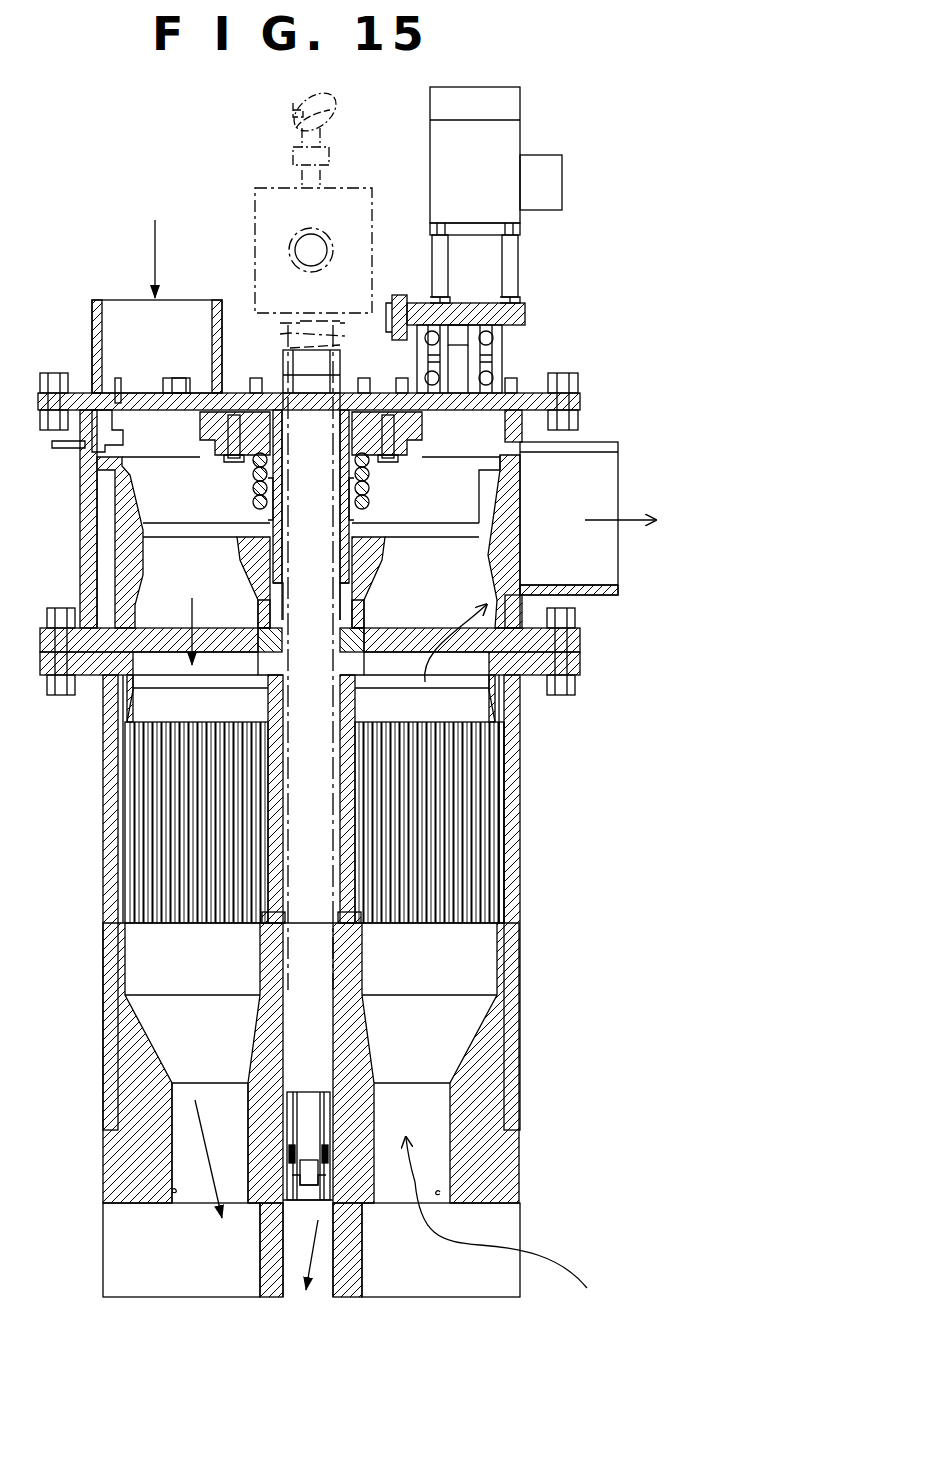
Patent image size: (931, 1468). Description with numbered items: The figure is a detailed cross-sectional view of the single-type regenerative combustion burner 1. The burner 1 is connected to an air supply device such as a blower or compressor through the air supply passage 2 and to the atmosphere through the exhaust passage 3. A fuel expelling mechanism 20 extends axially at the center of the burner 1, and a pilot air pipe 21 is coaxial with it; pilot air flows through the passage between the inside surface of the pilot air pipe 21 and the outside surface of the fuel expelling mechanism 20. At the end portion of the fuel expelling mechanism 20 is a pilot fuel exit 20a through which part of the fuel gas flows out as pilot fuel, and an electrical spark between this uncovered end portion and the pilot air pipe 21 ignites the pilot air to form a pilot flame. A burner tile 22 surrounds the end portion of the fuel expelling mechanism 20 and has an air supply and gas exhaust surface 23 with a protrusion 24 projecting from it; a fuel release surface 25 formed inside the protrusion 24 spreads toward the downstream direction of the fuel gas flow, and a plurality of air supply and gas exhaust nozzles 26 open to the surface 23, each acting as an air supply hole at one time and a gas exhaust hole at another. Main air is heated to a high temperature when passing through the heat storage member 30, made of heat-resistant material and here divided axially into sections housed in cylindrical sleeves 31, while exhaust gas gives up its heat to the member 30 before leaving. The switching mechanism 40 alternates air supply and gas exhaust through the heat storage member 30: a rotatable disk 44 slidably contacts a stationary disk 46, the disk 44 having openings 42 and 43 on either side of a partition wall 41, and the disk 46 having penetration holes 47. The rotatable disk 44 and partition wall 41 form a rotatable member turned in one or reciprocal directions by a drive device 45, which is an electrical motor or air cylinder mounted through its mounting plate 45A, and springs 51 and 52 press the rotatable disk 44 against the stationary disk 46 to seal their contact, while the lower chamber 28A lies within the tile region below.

The regenerative combustion burner 1 is at (101, 880).
The air supply passage 2 is at (102, 320).
The exhaust passage 3 is at (600, 455).
The fuel expelling mechanism 20 is at (318, 1110).
The pilot fuel exit 20a is at (323, 1205).
The pilot air pipe 21 is at (322, 985).
The burner tile 22 is at (116, 1142).
The air supply and gas exhaust surface 23 is at (515, 1215).
The protrusion 24 is at (258, 1232).
The fuel release surface 25 is at (282, 1295).
The air supply and gas exhaust nozzles 26 is at (175, 1190).
The lower chamber 28A is at (180, 1155).
The heat storage member 30 is at (470, 815).
The cylindrical sleeves 31 is at (503, 757).
The switching mechanism 40 is at (110, 530).
The partition wall 41 is at (262, 575).
The opening 42 is at (262, 622).
The opening 43 is at (490, 622).
The rotatable disk 44 is at (385, 600).
The drive device 45 is at (520, 135).
The motor mounting plate 45A is at (530, 387).
The stationary disk 46 is at (355, 640).
The penetration holes 47 is at (254, 638).
The spring 51 is at (252, 474).
The spring 52 is at (124, 414).